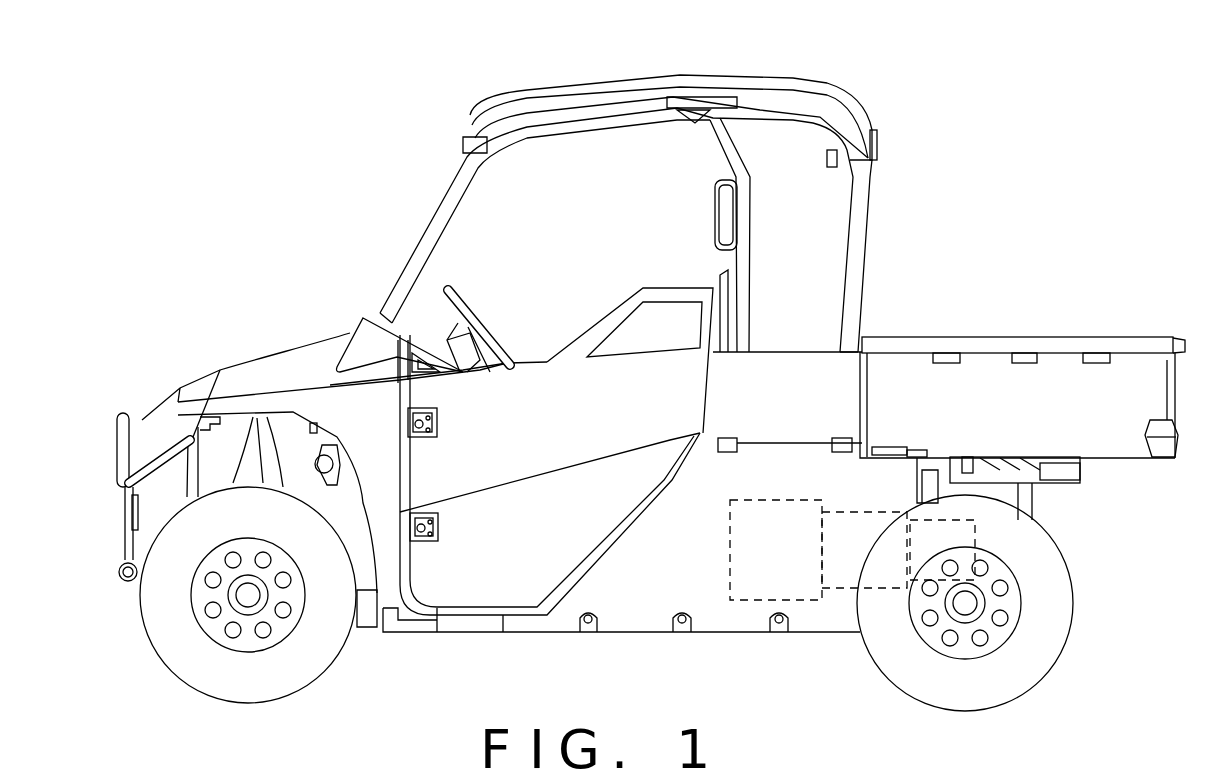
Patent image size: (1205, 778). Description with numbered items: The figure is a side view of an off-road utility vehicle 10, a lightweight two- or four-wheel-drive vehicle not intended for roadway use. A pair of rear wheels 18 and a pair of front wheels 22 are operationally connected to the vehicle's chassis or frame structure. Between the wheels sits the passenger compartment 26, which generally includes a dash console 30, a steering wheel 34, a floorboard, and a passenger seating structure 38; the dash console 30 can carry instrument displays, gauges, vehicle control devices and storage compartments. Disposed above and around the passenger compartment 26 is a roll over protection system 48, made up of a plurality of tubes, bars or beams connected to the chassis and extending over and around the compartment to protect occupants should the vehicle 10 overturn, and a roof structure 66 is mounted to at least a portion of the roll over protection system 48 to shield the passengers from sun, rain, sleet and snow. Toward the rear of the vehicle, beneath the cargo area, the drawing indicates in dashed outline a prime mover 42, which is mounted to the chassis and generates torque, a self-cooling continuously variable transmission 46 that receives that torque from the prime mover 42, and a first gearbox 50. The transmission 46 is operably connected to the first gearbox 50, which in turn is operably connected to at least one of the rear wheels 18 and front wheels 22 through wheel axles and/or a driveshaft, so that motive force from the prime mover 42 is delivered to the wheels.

The off-road utility vehicle 10 is at (352, 122).
The rear wheels 18 is at (1050, 606).
The front wheels 22 is at (264, 596).
The passenger compartment 26 is at (380, 222).
The dash console 30 is at (380, 318).
The steering wheel 34 is at (468, 318).
The passenger seating structure 38 is at (720, 278).
The prime mover 42 is at (750, 512).
The self-cooling continuously variable transmission 46 is at (882, 582).
The roll over protection system 48 is at (437, 210).
The first gearbox 50 is at (975, 530).
The roof structure 66 is at (525, 105).